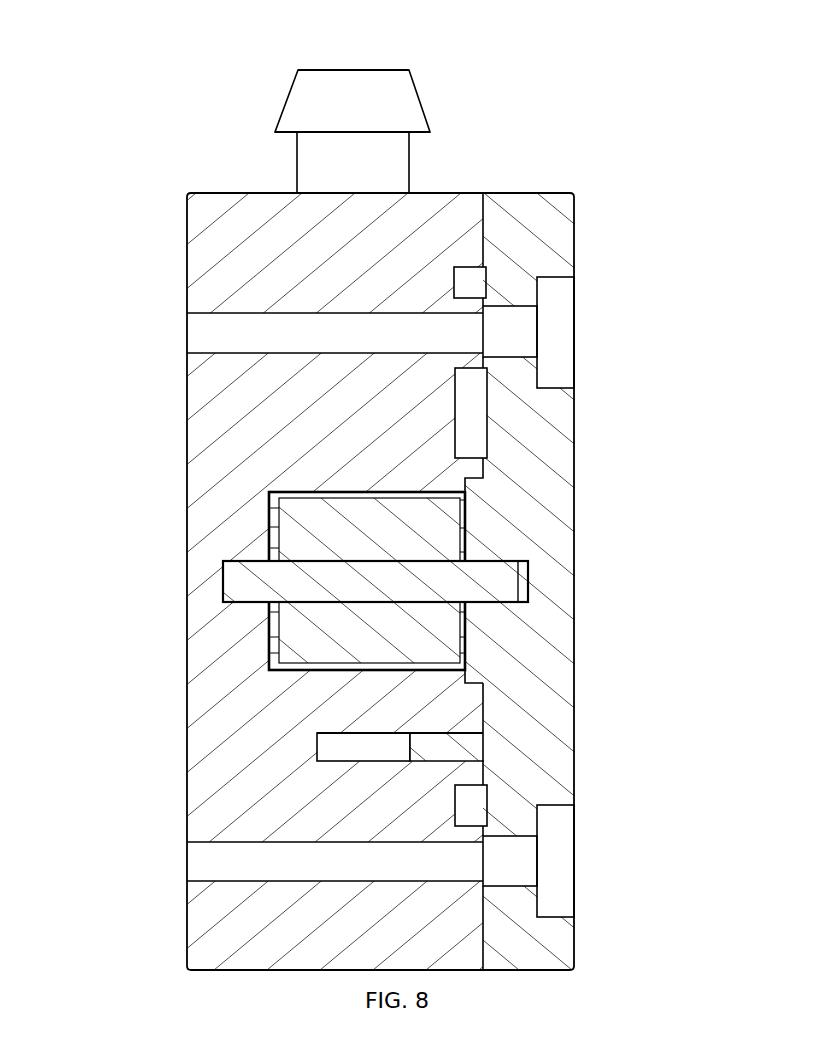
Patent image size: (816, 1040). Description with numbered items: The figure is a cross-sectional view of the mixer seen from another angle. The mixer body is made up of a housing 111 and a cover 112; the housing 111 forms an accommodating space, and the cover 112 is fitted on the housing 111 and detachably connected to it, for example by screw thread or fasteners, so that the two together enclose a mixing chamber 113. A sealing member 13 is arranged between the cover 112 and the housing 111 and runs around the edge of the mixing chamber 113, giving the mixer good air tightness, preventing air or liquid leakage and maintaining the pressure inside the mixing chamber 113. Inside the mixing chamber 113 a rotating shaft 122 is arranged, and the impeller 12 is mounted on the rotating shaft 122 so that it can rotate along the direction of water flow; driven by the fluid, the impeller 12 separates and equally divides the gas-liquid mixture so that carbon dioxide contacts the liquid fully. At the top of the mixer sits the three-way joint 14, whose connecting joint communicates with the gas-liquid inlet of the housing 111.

The three-way joint 14 is at (370, 113).
The sealing member 13 is at (472, 429).
The mixing chamber 113 is at (378, 482).
The rotating shaft 122 is at (483, 588).
The impeller 12 is at (380, 633).
The cover 112 is at (530, 758).
The housing 111 is at (360, 802).